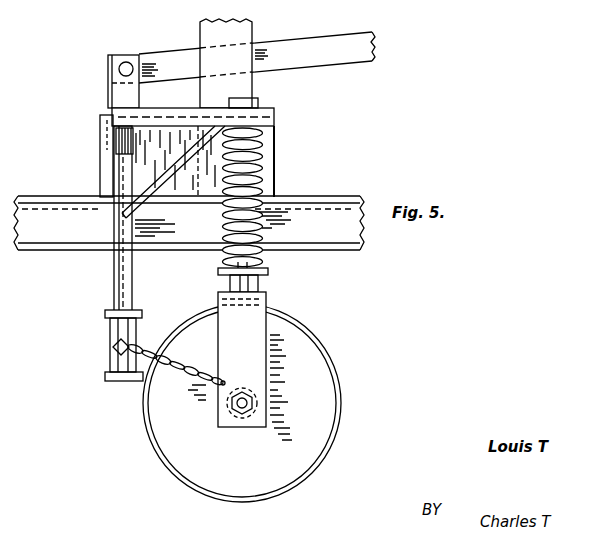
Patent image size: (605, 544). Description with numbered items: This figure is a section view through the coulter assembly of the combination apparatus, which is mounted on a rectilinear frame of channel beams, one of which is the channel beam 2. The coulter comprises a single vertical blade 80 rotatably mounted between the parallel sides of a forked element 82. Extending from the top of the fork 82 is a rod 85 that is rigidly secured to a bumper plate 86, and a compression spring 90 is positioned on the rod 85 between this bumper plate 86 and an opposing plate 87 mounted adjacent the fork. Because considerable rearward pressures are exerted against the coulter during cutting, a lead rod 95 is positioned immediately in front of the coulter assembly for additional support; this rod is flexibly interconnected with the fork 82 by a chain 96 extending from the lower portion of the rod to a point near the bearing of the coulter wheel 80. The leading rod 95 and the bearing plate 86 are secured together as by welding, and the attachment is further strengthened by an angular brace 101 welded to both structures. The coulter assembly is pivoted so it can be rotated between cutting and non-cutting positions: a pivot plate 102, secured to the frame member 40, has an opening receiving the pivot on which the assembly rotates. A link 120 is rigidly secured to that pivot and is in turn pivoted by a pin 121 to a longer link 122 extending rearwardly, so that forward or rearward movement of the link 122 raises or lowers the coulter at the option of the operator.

The channel beam 2 is at (187, 241).
The frame member 40 is at (240, 28).
The vertical blade 80 is at (325, 389).
The forked element 82 is at (267, 297).
The rod 85 is at (263, 155).
The bumper plate 86 is at (275, 111).
The opposing plate 87 is at (268, 272).
The compression spring 90 is at (275, 180).
The lead rod 95 is at (113, 268).
The chain 96 is at (173, 362).
The angular brace 101 is at (165, 176).
The pivot plate 102 is at (100, 161).
The link 120 is at (108, 96).
The pin 121 is at (128, 62).
The longer link 122 is at (316, 43).